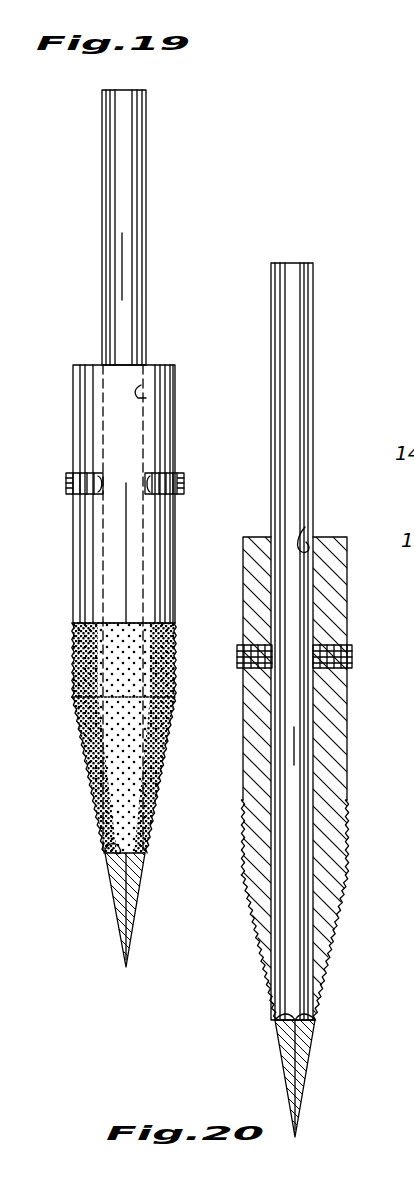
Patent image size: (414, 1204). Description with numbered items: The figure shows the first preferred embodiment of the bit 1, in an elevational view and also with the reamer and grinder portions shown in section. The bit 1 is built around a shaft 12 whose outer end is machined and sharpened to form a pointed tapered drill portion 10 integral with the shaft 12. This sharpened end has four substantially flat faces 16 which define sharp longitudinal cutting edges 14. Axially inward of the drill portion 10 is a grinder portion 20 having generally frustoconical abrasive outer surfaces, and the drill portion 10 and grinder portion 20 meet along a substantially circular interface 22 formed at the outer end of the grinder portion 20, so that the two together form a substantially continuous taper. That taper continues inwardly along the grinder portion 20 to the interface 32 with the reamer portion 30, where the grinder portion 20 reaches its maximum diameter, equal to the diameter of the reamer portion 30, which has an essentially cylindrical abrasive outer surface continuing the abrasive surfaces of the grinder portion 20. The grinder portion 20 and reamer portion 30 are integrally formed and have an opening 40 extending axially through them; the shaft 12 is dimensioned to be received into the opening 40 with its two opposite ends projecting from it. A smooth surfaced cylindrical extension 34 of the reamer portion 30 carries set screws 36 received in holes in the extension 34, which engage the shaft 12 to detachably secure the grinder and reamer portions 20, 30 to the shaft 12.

In FIG. 19, the bit 1 is at (174, 288).
In FIG. 20, the bit 1 is at (346, 395).
In FIG. 19, the drill portion 10 is at (118, 918).
In FIG. 20, the drill portion 10 is at (285, 1036).
In FIG. 19, the shaft 12 is at (118, 200).
In FIG. 20, the shaft 12 is at (290, 341).
In FIG. 19, the cutting edges 14 is at (135, 921).
In FIG. 20, the cutting edges 14 is at (320, 1056).
In FIG. 19, the flat faces 16 is at (116, 879).
In FIG. 20, the flat faces 16 is at (288, 1058).
In FIG. 19, the grinder portion 20 is at (95, 811).
In FIG. 20, the grinder portion 20 is at (258, 958).
In FIG. 19, the interface 22 is at (103, 846).
In FIG. 20, the interface 22 is at (320, 1025).
In FIG. 19, the reamer portion 30 is at (177, 630).
In FIG. 20, the reamer portion 30 is at (349, 830).
In FIG. 19, the interface 32 is at (177, 678).
In FIG. 20, the interface 32 is at (350, 860).
In FIG. 19, the cylindrical extension 34 is at (176, 546).
In FIG. 20, the cylindrical extension 34 is at (335, 601).
In FIG. 19, the set screws 36 is at (184, 484).
In FIG. 20, the set screws 36 is at (352, 657).
In FIG. 19, the opening 40 is at (150, 396).
In FIG. 20, the opening 40 is at (305, 527).